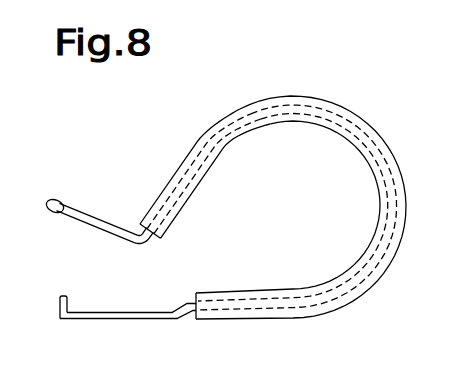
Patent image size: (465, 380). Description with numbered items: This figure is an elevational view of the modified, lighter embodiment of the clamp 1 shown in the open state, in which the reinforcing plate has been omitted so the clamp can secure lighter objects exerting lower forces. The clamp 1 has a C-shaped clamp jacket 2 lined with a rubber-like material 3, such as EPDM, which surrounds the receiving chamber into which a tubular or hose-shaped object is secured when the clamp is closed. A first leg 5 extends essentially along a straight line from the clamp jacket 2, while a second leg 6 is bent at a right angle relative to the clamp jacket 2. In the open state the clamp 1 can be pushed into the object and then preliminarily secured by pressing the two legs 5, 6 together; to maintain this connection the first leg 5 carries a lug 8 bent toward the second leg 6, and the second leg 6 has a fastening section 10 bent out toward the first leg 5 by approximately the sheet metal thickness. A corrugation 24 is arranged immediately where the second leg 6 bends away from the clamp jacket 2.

The clamp 1 is at (216, 210).
The clamp jacket 2 is at (212, 138).
The rubber-like material 3 is at (266, 97).
The first leg 5 is at (96, 320).
The second leg 6 is at (89, 214).
The lug 8 is at (59, 306).
The fastening section 10 is at (50, 200).
The corrugation 24 is at (138, 236).